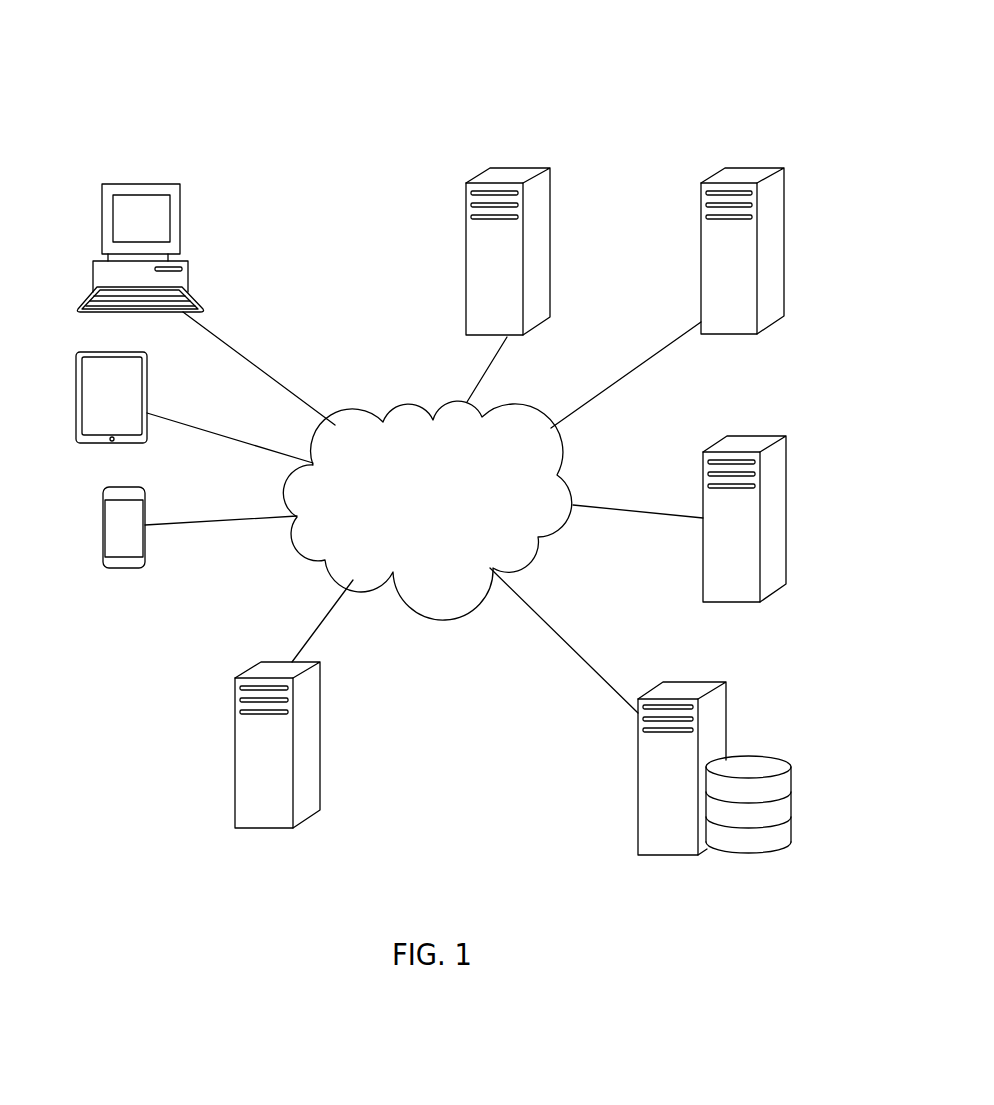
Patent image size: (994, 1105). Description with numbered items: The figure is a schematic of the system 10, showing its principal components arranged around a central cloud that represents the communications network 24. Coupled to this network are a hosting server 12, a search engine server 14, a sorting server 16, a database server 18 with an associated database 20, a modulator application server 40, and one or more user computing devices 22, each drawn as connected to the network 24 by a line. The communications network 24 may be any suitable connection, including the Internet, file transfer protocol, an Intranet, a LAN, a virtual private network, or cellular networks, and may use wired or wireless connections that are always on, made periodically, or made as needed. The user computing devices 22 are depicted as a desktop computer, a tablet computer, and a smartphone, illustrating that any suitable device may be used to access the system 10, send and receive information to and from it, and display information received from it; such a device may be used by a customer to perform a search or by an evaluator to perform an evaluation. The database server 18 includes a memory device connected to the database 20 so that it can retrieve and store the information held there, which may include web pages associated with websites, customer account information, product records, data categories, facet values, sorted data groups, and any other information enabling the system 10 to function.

The system 10 is at (603, 43).
The hosting server 12 is at (557, 160).
The search engine server 14 is at (790, 160).
The sorting server 16 is at (783, 425).
The database server 18 is at (738, 692).
The database 20 is at (793, 748).
The user computing device 22 is at (107, 184).
The communications network 24 is at (440, 502).
The modulator application server 40 is at (328, 658).